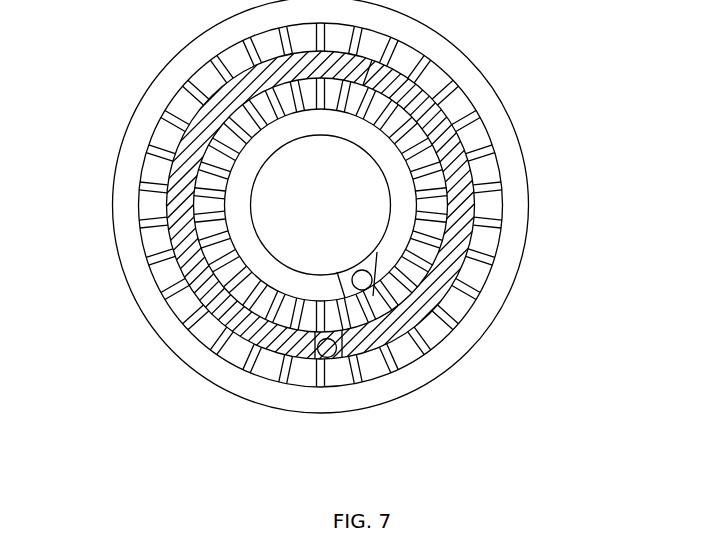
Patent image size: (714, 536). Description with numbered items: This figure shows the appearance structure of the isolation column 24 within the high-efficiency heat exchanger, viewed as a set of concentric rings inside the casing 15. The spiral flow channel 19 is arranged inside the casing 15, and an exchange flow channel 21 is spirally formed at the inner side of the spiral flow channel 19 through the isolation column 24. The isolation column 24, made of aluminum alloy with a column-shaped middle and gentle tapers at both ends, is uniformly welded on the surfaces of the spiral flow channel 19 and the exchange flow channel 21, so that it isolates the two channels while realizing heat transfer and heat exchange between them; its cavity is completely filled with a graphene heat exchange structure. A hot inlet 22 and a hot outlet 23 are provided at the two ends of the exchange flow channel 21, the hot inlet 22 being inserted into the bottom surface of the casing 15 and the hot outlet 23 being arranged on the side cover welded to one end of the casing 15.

The casing 15 is at (515, 175).
The spiral flow channel 19 is at (217, 124).
The exchange flow channel 21 is at (413, 200).
The hot inlet 22 is at (362, 280).
The hot outlet 23 is at (327, 348).
The isolation column 24 is at (145, 227).